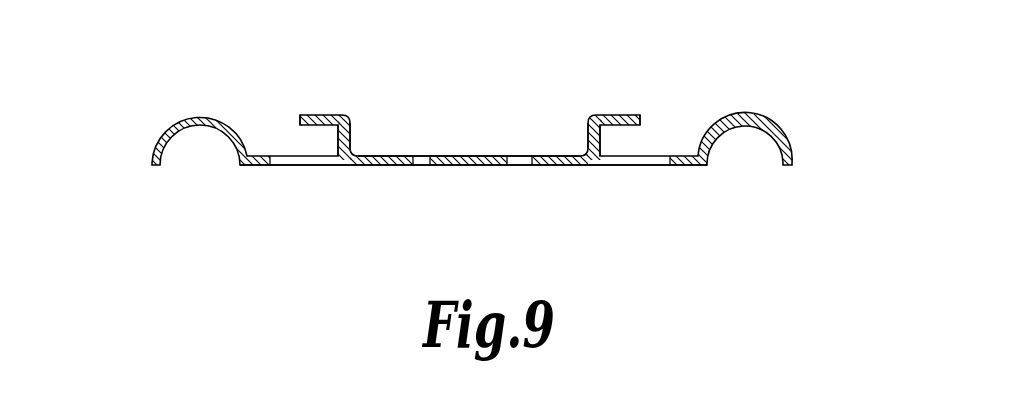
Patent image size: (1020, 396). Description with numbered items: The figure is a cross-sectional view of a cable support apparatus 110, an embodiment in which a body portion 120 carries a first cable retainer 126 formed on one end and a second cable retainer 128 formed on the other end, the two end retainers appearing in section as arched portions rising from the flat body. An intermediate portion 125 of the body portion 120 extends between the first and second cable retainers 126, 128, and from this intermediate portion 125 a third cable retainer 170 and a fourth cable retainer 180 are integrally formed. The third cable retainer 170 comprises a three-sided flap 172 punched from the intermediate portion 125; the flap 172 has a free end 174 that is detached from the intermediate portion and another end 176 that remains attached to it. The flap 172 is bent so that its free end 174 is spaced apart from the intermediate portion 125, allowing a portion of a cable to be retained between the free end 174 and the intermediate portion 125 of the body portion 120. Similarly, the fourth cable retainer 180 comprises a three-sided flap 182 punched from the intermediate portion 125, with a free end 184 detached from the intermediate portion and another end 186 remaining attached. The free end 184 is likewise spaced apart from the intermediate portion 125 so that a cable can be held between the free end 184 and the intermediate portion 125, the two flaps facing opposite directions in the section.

The cable support apparatus 110 is at (781, 193).
The body portion 120 is at (490, 187).
The intermediate portion 125 is at (470, 156).
The first cable retainer 126 is at (150, 137).
The second cable retainer 128 is at (789, 131).
The third cable retainer 170 is at (335, 109).
The flap 172 is at (302, 109).
The free end 174 is at (297, 118).
The attached end 176 is at (352, 140).
The fourth cable retainer 180 is at (624, 109).
The flap 182 is at (596, 109).
The free end 184 is at (642, 118).
The attached end 186 is at (585, 140).